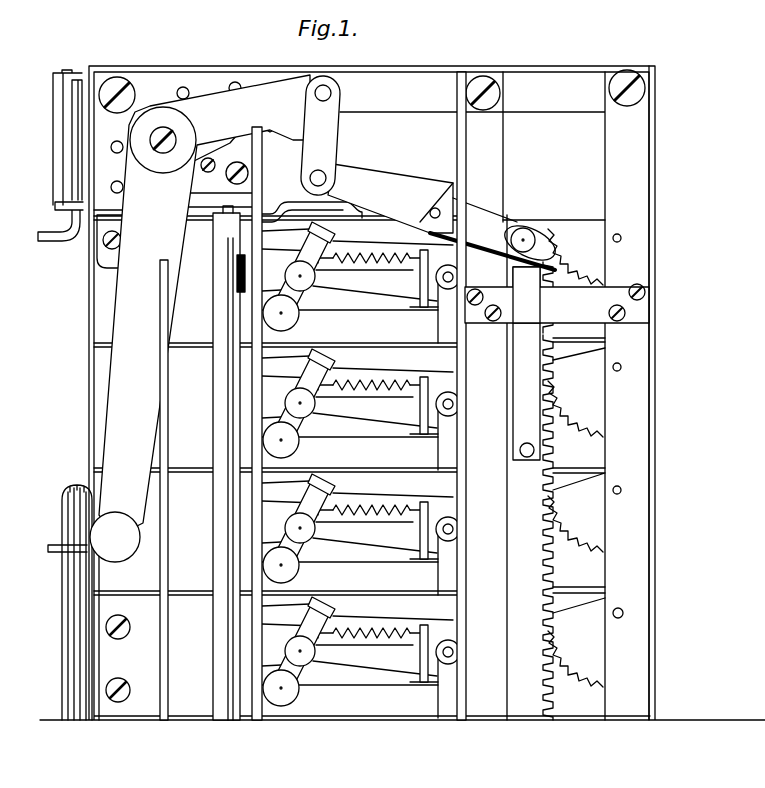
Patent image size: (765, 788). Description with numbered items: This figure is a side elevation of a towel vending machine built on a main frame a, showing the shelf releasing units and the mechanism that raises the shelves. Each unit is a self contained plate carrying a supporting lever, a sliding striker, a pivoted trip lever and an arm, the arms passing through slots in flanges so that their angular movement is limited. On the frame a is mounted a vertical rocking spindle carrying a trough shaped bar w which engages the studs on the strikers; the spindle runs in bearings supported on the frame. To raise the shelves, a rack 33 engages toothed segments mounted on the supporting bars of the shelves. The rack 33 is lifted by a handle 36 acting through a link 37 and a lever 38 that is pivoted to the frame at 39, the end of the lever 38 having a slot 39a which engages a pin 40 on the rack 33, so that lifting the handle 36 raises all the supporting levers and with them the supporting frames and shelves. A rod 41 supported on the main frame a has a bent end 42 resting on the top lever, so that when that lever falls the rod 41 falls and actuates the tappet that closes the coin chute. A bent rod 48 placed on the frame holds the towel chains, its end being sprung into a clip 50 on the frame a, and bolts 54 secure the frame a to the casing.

The rack 33 is at (523, 513).
The handle 36 is at (112, 530).
The link 37 is at (328, 136).
The lever 38 is at (378, 190).
The pivot 39 is at (443, 211).
The slot 39a is at (543, 250).
The pin 40 is at (543, 233).
The rod 41 is at (162, 674).
The bent end 42 is at (312, 200).
The bent rod 48 is at (70, 659).
The clip 50 is at (57, 553).
The bolt 54 is at (43, 236).
The main frame a is at (657, 380).
The trough shaped bar w is at (248, 702).